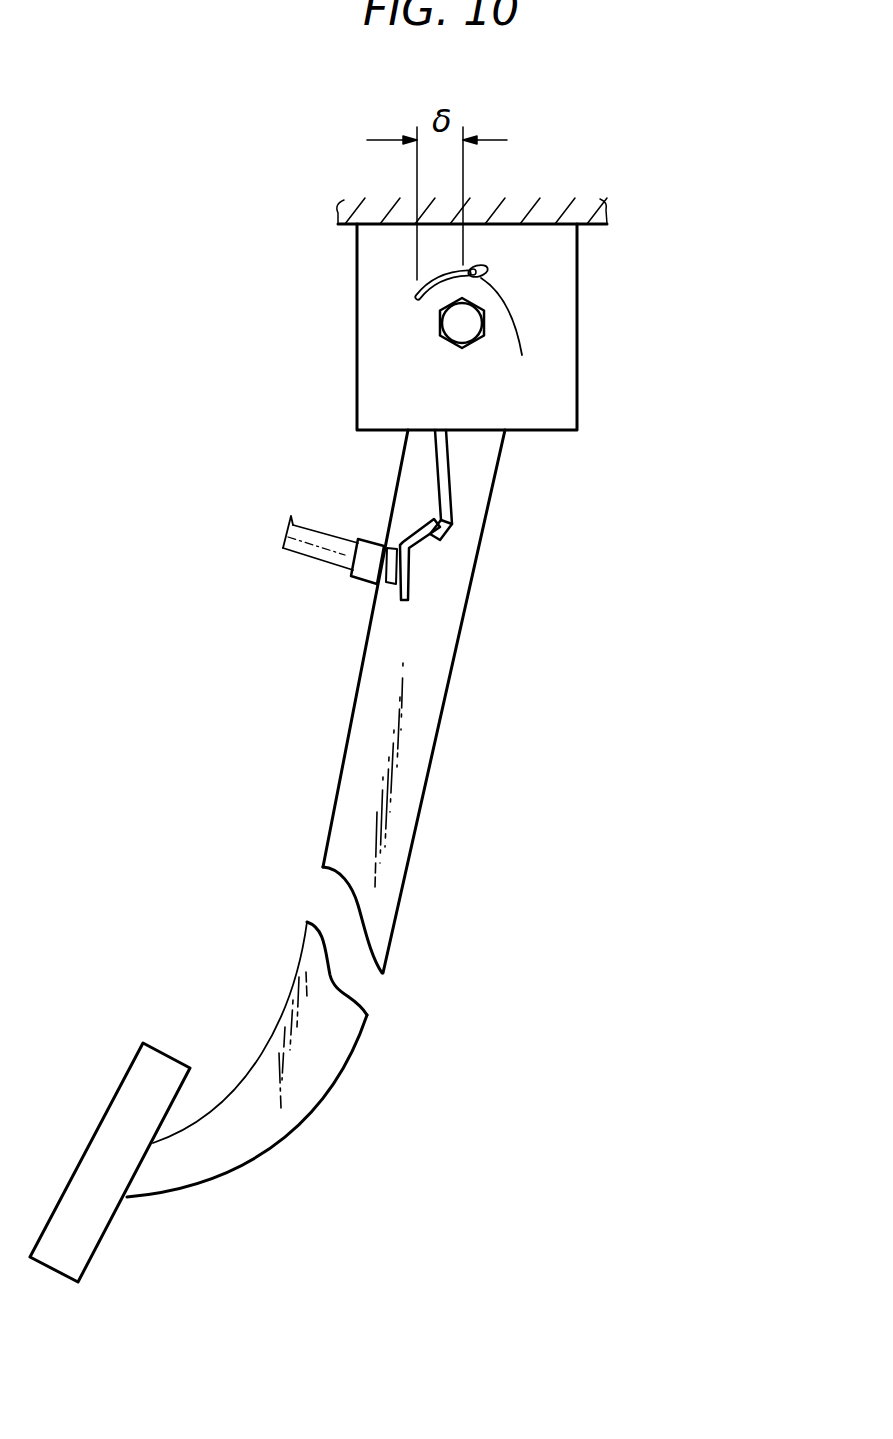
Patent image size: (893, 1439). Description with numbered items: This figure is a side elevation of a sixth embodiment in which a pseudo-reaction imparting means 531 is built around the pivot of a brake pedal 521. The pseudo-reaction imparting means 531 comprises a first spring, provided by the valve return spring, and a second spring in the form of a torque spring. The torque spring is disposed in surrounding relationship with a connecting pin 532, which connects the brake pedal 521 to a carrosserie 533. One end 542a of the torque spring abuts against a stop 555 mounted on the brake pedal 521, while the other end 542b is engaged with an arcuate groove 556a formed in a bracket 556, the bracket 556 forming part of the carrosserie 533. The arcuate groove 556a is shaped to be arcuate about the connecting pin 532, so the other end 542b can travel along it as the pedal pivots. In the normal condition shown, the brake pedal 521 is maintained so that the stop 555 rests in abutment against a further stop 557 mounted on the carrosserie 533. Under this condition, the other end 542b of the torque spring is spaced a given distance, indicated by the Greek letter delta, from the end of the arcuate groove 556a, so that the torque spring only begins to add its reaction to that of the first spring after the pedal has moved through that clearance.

The brake pedal 521 is at (433, 770).
The pseudo-reaction imparting means 531 is at (584, 366).
The connecting pin 532 is at (450, 326).
The carrosserie 533 is at (338, 208).
The one end of the torque spring 542a is at (441, 534).
The other end of the torque spring 542b is at (508, 344).
The stop 555 is at (407, 581).
The bracket 556 is at (578, 247).
The arcuate groove 556a is at (487, 268).
The stop 557 is at (353, 578).